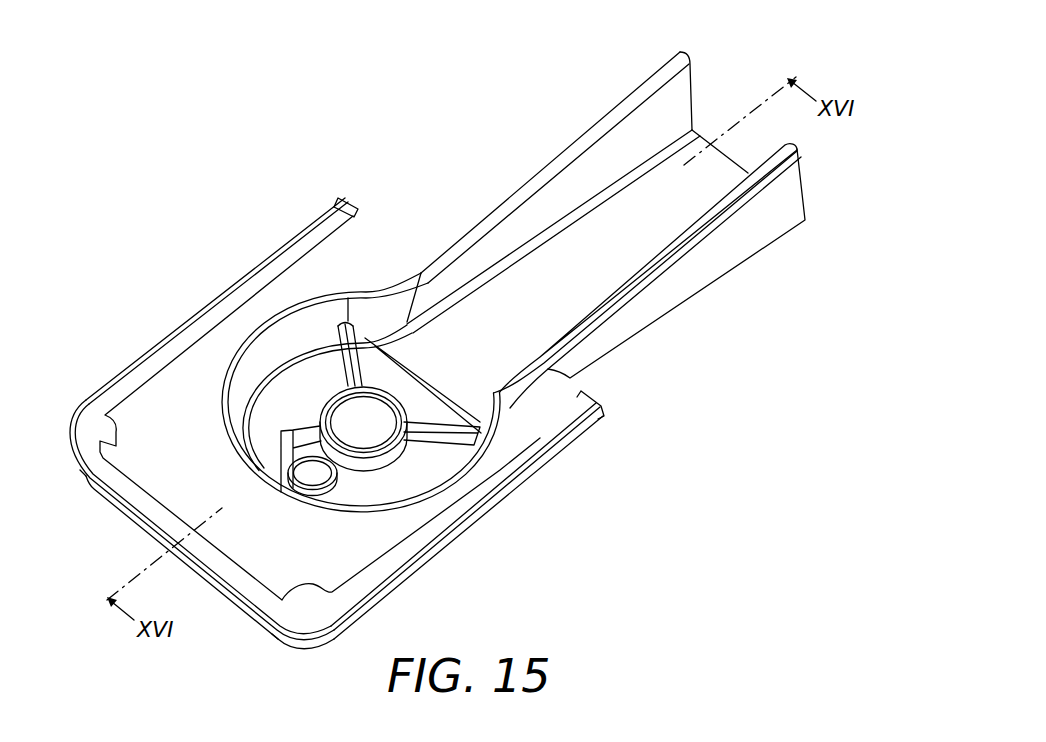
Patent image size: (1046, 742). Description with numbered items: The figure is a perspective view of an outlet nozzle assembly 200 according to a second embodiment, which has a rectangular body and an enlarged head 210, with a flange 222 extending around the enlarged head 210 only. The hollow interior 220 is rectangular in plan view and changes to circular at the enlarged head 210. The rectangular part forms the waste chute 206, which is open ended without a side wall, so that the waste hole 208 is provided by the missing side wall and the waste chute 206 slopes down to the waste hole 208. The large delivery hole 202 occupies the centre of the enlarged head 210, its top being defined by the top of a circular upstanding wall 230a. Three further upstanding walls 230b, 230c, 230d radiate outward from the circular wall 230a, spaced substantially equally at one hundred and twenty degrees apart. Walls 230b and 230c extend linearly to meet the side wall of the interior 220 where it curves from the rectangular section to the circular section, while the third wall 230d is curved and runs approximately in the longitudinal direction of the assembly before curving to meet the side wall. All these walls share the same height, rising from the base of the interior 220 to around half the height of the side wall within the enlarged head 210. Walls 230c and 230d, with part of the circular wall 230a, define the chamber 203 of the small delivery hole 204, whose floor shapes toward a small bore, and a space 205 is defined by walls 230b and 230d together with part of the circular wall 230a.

The outlet nozzle assembly 200 is at (763, 292).
The large delivery hole 202 is at (405, 437).
The chamber 203 is at (397, 487).
The small delivery hole 204 is at (318, 482).
The space 205 is at (297, 383).
The waste chute 206 is at (612, 253).
The waste hole 208 is at (719, 95).
The enlarged head 210 is at (156, 381).
The hollow interior 220 is at (500, 178).
The flange 222 is at (567, 419).
The circular upstanding wall 230a is at (378, 430).
The upstanding wall 230b is at (358, 328).
The upstanding wall 230c is at (463, 440).
The curved upstanding wall 230d is at (300, 441).